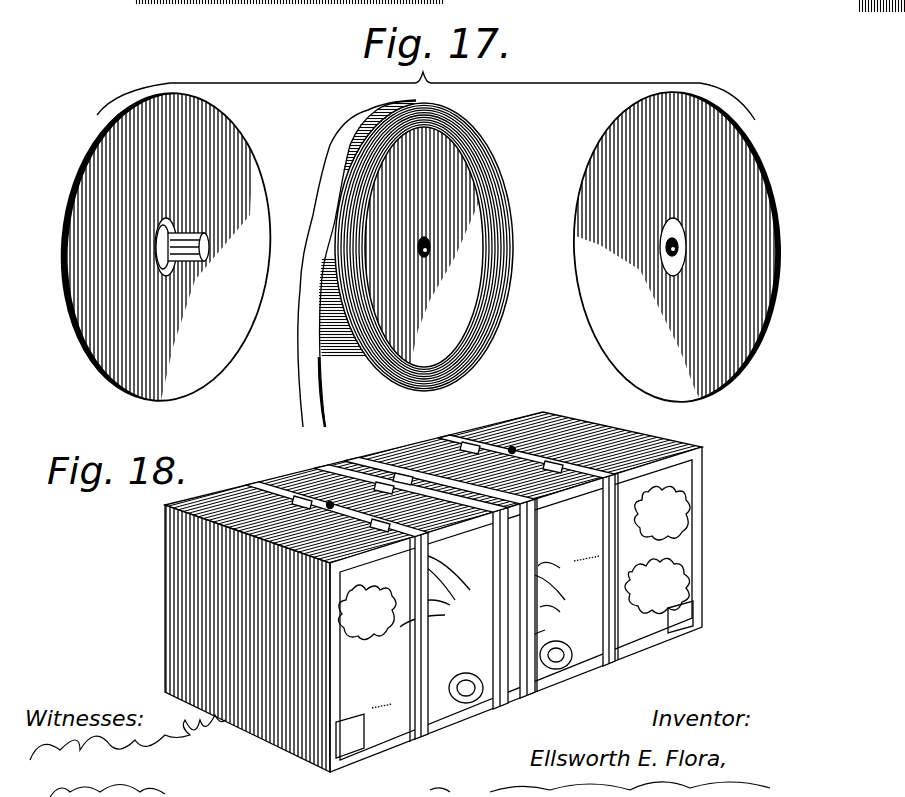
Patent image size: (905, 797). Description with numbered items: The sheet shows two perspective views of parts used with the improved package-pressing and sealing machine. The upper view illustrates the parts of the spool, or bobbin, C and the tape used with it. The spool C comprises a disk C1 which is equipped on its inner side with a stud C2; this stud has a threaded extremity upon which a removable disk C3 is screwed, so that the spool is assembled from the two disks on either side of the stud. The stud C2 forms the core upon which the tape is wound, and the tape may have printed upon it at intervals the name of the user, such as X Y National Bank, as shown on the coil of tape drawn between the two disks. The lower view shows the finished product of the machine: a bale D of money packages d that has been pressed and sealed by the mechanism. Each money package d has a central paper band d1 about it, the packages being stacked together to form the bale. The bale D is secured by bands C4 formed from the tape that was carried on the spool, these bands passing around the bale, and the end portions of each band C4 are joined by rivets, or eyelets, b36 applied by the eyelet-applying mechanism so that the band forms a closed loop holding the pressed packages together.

In FIG. 17, the spool or bobbin C is at (301, 372).
In FIG. 17, the disk C1 is at (84, 328).
In FIG. 17, the stud C2 is at (192, 260).
In FIG. 17, the removable disk C3 is at (676, 248).
In FIG. 18, the bands C4 is at (604, 668).
In FIG. 18, the rivets or eyelets b36 is at (329, 503).
In FIG. 18, the central paper band d1 is at (393, 451).
In FIG. 18, the money packages d is at (250, 732).
In FIG. 18, the bale D is at (433, 595).